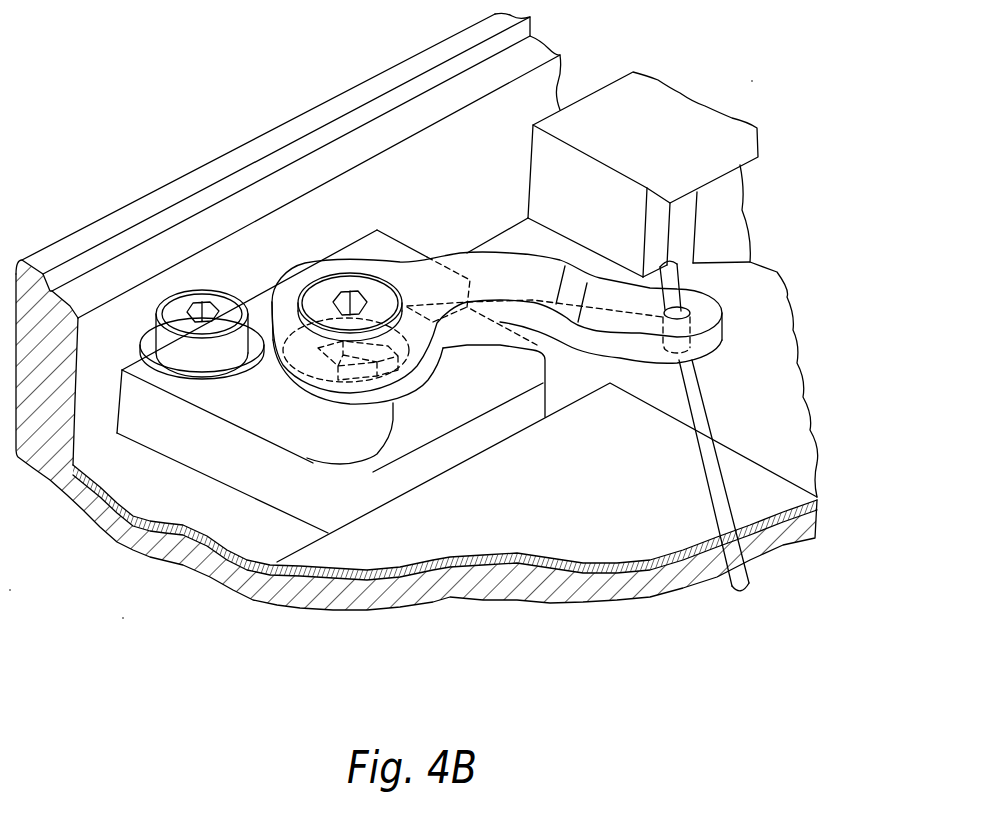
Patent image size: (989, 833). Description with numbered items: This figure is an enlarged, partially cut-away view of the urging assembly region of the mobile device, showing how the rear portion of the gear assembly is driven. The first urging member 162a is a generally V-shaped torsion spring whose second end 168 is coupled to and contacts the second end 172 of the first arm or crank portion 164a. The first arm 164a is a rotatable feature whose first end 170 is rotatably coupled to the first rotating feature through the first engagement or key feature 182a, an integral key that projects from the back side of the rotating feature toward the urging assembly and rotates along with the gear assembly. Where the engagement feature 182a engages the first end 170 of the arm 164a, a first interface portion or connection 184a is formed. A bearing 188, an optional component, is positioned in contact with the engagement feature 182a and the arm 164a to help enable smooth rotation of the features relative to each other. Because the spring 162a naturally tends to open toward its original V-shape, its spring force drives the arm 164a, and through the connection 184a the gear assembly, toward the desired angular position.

The first urging member 162a is at (693, 400).
The first arm or crank portion 164a is at (510, 262).
The second end 168 is at (690, 273).
The first end 170 is at (322, 268).
The second end 172 is at (625, 280).
The first engagement or key feature 182a is at (345, 352).
The first interface portion or connection 184a is at (289, 270).
The bearing 188 is at (433, 397).